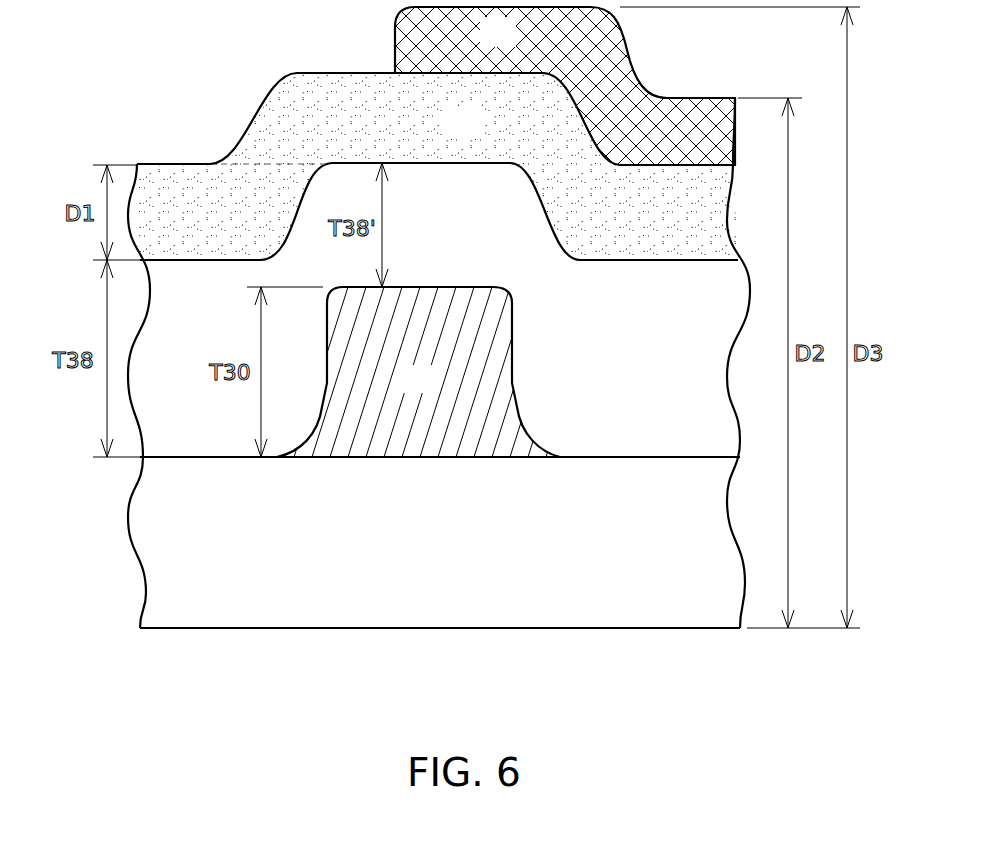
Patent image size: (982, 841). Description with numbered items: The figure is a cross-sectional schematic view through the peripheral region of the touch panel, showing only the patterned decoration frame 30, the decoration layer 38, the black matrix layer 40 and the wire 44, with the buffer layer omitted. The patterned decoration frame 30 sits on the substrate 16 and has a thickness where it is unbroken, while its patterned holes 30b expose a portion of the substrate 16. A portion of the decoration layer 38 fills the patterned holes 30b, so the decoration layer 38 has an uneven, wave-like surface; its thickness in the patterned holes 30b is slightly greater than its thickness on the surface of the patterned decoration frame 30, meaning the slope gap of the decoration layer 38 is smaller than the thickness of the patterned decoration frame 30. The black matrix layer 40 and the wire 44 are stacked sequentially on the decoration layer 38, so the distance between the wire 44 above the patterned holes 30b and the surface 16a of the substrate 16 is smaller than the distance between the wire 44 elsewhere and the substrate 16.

The substrate 16 is at (406, 557).
The surface of the substrate 16a is at (183, 458).
The patterned decoration frame 30 is at (406, 392).
The patterned holes 30b is at (650, 321).
The decoration layer 38 is at (429, 242).
The black matrix layer 40 is at (451, 134).
The wire 44 is at (483, 45).